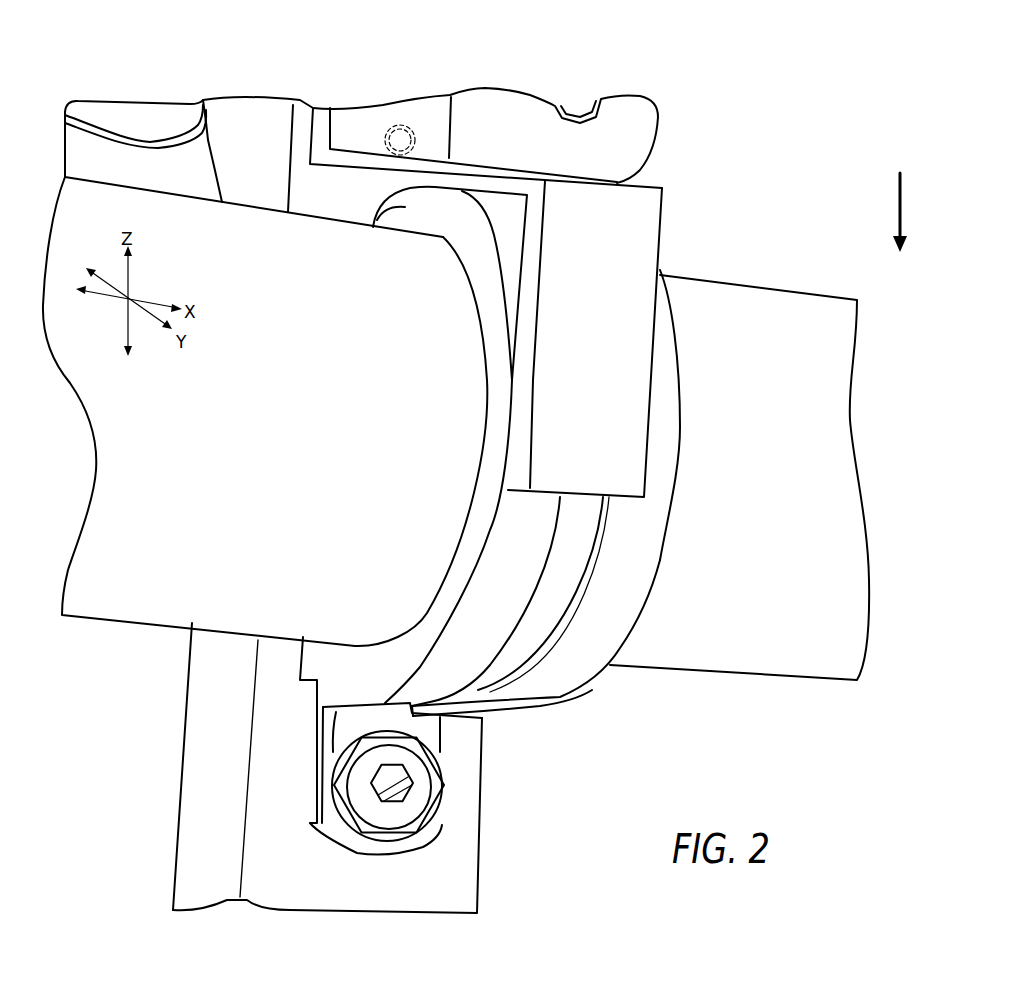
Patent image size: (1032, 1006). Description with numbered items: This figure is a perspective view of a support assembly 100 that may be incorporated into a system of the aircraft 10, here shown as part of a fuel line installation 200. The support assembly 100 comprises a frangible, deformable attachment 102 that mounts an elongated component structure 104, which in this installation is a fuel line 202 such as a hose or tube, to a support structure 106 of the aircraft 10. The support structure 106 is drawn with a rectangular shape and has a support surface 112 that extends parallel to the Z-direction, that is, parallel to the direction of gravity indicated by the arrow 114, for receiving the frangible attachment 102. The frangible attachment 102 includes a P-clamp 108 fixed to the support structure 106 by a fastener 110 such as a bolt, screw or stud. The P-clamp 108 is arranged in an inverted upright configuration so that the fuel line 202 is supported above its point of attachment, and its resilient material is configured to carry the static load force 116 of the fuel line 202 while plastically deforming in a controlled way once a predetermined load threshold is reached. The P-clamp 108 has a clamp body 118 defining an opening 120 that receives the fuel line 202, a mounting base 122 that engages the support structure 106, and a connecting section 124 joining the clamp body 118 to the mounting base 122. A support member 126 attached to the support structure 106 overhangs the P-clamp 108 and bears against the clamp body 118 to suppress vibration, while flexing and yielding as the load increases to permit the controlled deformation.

The aircraft 10 is at (763, 181).
The support assembly 100 is at (517, 110).
The fuel line installation 200 is at (625, 148).
The frangible attachment 102 is at (547, 745).
The elongated component structure 104 is at (739, 454).
The fuel line 202 is at (750, 353).
The support structure 106 is at (207, 845).
The P-clamp 108 is at (612, 637).
The fastener 110 is at (390, 818).
The support surface 112 is at (313, 872).
The arrow 114 is at (859, 188).
The static load force 116 is at (893, 198).
The clamp body 118 is at (637, 560).
The opening 120 is at (350, 647).
The mounting base 122 is at (330, 745).
The connecting section 124 is at (333, 712).
The support member 126 is at (497, 163).